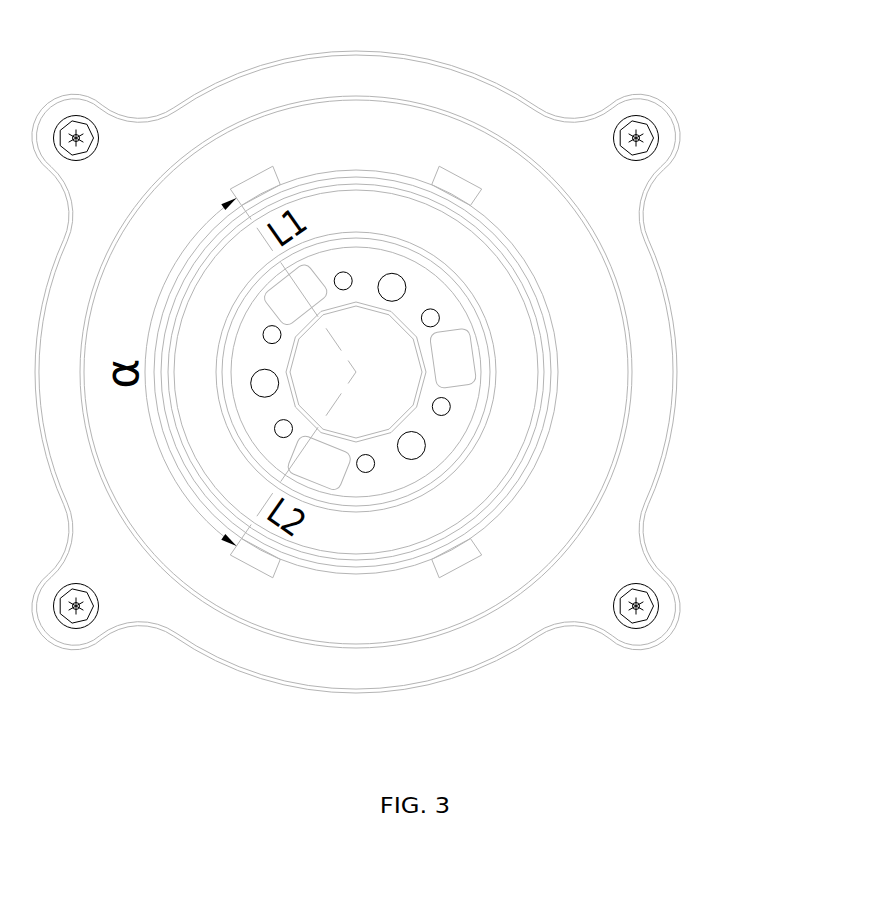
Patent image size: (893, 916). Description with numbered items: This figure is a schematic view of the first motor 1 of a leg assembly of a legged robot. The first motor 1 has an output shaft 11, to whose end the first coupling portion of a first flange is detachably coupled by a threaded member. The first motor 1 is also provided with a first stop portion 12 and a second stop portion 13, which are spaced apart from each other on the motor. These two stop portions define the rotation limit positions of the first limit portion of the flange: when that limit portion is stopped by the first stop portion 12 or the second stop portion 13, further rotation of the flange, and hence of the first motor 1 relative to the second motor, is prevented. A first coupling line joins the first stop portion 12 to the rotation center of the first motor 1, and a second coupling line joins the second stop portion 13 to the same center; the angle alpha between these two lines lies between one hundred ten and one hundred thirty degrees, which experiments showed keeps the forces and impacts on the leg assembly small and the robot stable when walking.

The first motor 1 is at (680, 347).
The output shaft 11 is at (475, 365).
The first stop portion 12 is at (258, 192).
The second stop portion 13 is at (255, 560).